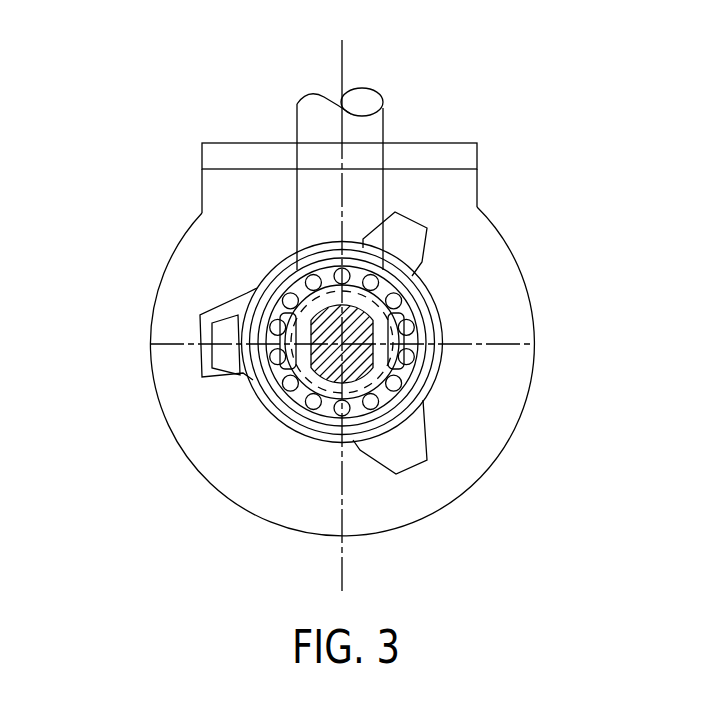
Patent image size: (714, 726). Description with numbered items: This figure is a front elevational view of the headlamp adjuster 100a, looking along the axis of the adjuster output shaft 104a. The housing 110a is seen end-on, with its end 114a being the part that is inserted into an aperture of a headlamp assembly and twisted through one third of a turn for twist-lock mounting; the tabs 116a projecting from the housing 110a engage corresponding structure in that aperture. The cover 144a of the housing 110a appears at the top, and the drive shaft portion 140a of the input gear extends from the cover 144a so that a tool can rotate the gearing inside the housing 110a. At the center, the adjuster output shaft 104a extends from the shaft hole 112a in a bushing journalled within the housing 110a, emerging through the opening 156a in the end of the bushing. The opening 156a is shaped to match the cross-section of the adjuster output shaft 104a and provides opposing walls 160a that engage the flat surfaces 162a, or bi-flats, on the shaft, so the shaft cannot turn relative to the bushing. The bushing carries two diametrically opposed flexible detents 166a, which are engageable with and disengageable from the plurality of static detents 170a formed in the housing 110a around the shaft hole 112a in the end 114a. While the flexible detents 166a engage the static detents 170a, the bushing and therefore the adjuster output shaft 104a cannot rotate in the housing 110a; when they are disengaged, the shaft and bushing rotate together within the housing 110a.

The headlamp adjuster 100a is at (476, 522).
The adjuster output shaft 104a is at (318, 382).
The housing 110a is at (470, 126).
The shaft hole 112a is at (385, 380).
The end of the housing 114a is at (398, 306).
The tabs 116a is at (262, 343).
The drive shaft portion 140a is at (384, 110).
The cover 144a is at (233, 152).
The opening 156a is at (420, 270).
The opposing walls 160a is at (398, 312).
The flat surfaces 162a is at (395, 370).
The flexible detents 166a is at (410, 334).
The static detents 170a is at (322, 280).